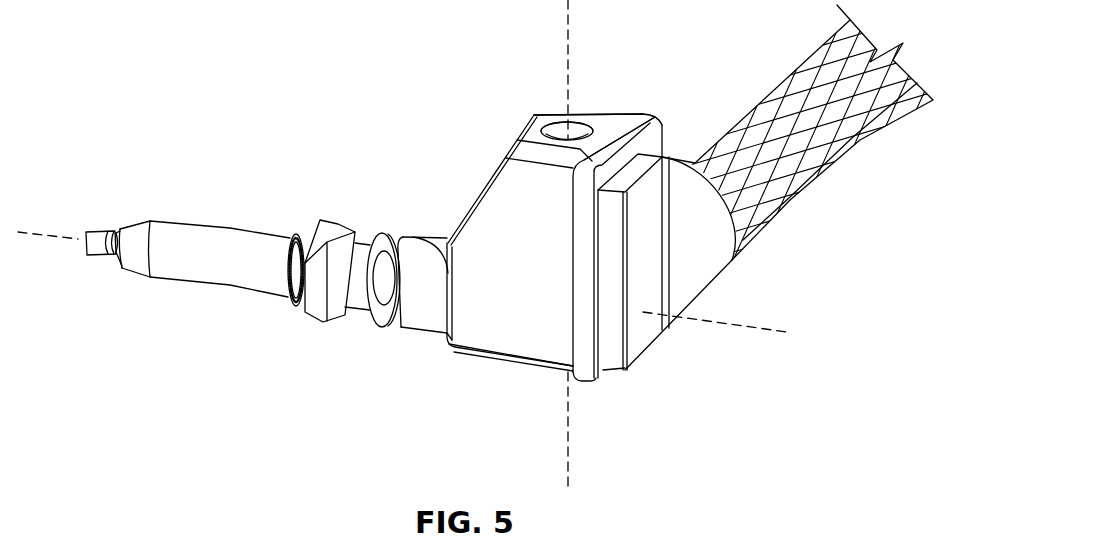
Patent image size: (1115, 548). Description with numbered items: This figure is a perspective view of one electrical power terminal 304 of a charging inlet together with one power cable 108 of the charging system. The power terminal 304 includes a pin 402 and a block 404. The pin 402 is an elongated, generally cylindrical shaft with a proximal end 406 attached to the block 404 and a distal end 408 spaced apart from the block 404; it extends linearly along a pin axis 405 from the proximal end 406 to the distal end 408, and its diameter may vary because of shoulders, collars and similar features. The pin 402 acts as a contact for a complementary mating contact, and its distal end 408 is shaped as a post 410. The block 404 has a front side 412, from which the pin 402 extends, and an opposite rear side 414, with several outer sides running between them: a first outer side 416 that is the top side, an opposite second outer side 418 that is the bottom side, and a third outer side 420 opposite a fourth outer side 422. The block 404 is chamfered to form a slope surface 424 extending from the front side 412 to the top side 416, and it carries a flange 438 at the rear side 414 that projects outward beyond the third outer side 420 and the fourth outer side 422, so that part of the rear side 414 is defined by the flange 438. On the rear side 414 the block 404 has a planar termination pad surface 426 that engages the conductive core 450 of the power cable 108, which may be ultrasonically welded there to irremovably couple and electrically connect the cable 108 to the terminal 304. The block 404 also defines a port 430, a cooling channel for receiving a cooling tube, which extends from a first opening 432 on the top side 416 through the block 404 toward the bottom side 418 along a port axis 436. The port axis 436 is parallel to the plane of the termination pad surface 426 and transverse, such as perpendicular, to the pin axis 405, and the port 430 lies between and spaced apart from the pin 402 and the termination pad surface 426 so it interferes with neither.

The power cable 108 is at (783, 102).
The electrical power terminal 304 is at (499, 163).
The pin 402 is at (262, 243).
The block 404 is at (508, 203).
The pin axis 405 is at (63, 237).
The proximal end 406 is at (438, 343).
The distal end 408 is at (84, 268).
The post 410 is at (100, 235).
The front side 412 is at (447, 272).
The rear side 414 is at (660, 156).
The first outer side 416 is at (602, 133).
The second outer side 418 is at (535, 362).
The third outer side 420 is at (503, 290).
The fourth outer side 422 is at (628, 110).
The slope surface 424 is at (465, 205).
The termination pad surface 426 is at (665, 146).
The port 430 is at (556, 125).
The first opening 432 is at (536, 120).
The port axis 436 is at (567, 42).
The flange 438 is at (638, 153).
The conductive core 450 is at (643, 287).